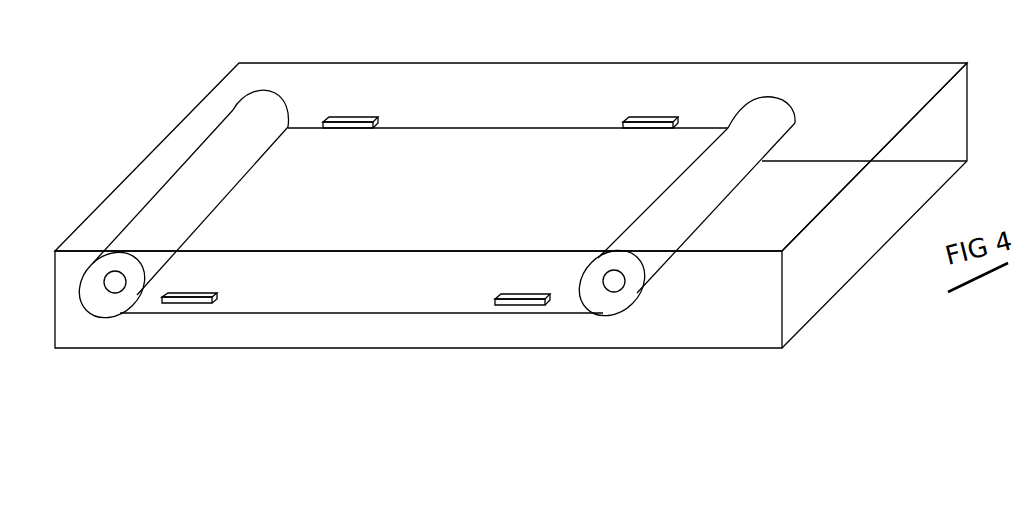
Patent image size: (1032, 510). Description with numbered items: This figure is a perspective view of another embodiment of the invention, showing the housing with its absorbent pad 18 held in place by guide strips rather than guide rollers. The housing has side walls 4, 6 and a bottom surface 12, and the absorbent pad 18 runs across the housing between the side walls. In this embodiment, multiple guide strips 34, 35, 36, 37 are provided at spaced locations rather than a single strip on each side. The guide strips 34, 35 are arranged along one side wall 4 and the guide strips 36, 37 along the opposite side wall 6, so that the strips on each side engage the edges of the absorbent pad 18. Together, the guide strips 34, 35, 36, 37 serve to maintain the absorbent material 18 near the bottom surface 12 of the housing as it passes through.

The side wall 4 is at (840, 93).
The side wall 6 is at (683, 302).
The bottom surface 12 is at (362, 328).
The absorbent pad 18 is at (458, 213).
The guide strip 34 is at (352, 124).
The guide strip 35 is at (655, 125).
The guide strip 36 is at (187, 303).
The guide strip 37 is at (522, 305).